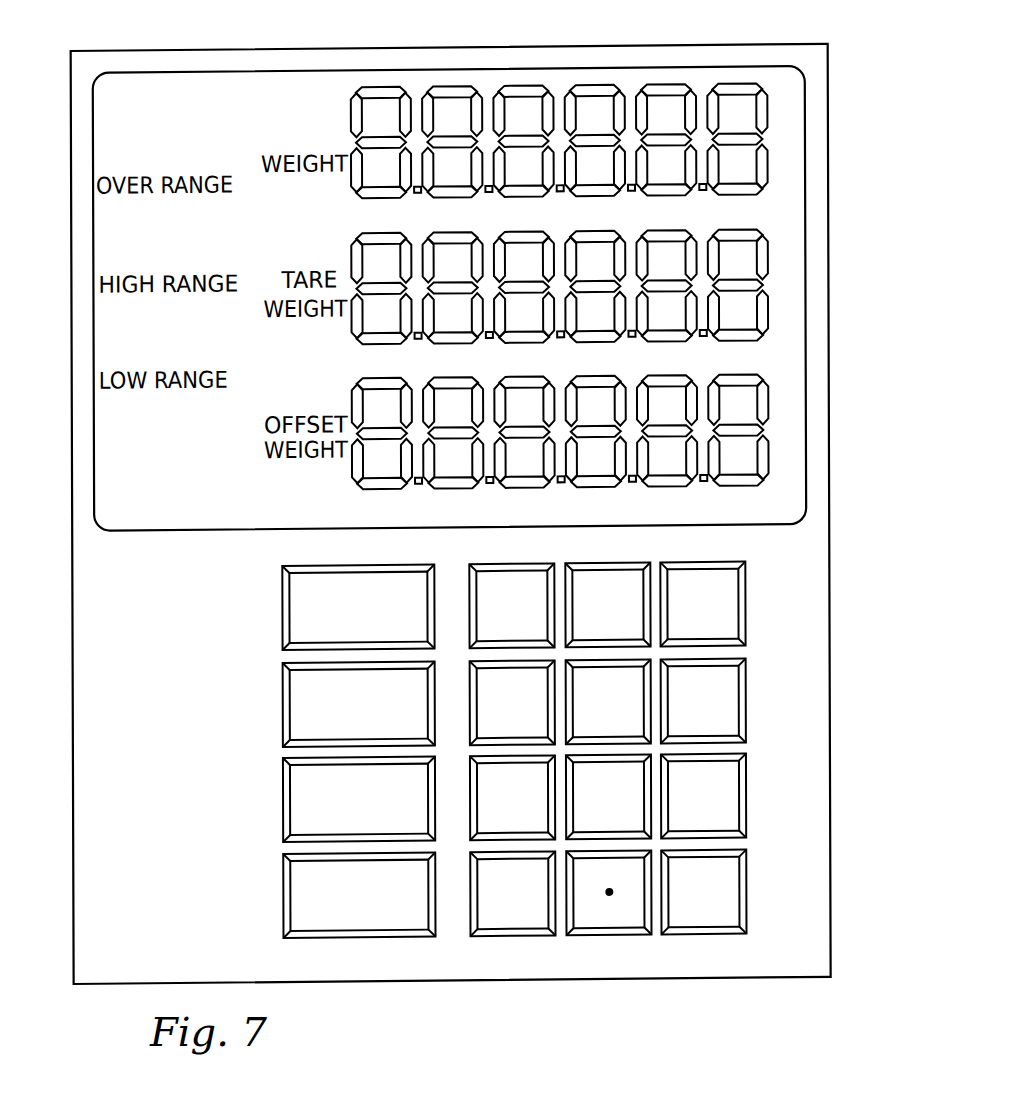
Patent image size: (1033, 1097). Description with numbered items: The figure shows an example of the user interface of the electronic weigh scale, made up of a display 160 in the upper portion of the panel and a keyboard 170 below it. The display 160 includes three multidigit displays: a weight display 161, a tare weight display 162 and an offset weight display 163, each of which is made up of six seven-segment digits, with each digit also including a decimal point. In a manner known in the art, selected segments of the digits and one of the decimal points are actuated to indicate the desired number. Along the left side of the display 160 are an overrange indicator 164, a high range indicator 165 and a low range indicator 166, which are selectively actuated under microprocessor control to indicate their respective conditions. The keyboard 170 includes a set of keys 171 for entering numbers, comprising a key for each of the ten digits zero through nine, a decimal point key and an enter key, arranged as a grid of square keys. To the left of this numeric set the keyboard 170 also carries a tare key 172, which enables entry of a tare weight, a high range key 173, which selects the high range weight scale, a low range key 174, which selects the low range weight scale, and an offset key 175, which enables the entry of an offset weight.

The display 160 is at (722, 86).
The weight display 161 is at (350, 124).
The tare weight display 162 is at (352, 261).
The offset weight display 163 is at (352, 411).
The overrange indicator 164 is at (177, 159).
The high range indicator 165 is at (177, 255).
The low range indicator 166 is at (173, 357).
The keyboard 170 is at (452, 514).
The set of keys 171 is at (698, 948).
The tare key 172 is at (280, 614).
The high range key 173 is at (280, 702).
The low range key 174 is at (280, 807).
The offset key 175 is at (280, 895).